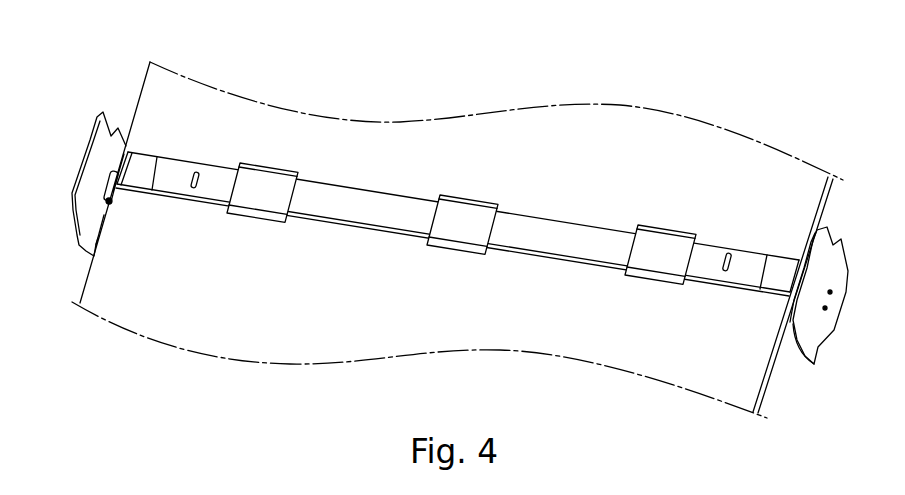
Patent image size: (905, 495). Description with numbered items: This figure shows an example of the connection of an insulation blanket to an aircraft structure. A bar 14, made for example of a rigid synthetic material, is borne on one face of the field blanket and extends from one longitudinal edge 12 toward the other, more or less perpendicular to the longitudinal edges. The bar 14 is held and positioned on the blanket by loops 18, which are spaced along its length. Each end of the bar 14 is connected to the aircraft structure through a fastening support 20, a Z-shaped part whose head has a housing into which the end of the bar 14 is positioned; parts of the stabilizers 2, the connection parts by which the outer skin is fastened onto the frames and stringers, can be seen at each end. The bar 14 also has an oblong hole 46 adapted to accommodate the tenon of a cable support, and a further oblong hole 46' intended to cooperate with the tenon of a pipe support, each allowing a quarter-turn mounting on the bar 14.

The longitudinal edge 12 is at (152, 82).
The bar 14 is at (367, 202).
The loops 18 is at (261, 170).
The oblong hole 46 is at (213, 112).
The oblong hole 46' is at (740, 179).
The stabilizer 2 is at (98, 147).
The fastening support 20 is at (110, 202).